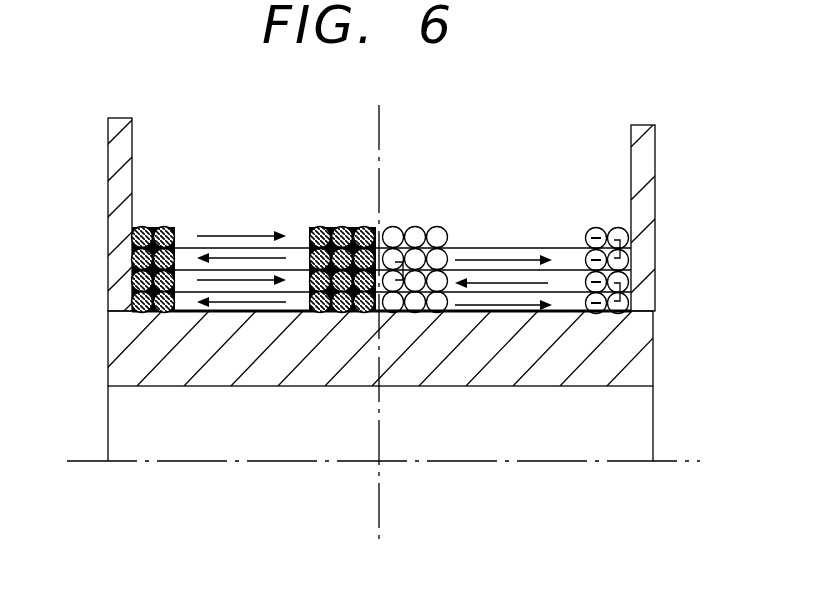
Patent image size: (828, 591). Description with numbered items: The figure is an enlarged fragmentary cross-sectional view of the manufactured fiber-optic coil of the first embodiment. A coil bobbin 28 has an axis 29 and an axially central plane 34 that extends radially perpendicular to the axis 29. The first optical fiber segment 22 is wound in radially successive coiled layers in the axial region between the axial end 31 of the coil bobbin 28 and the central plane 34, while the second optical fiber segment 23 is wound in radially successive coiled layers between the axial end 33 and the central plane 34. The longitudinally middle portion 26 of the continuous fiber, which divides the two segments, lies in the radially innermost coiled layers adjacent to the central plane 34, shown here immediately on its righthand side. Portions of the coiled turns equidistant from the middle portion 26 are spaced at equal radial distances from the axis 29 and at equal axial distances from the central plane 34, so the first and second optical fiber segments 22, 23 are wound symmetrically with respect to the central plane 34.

The first optical fiber segment 22 is at (164, 227).
The second optical fiber segment 23 is at (596, 230).
The longitudinally middle portion 26 is at (395, 228).
The coil bobbin 28 is at (664, 213).
The axis 29 is at (673, 466).
The axial end 31 is at (122, 200).
The axial end 33 is at (655, 372).
The axially central plane 34 is at (381, 158).